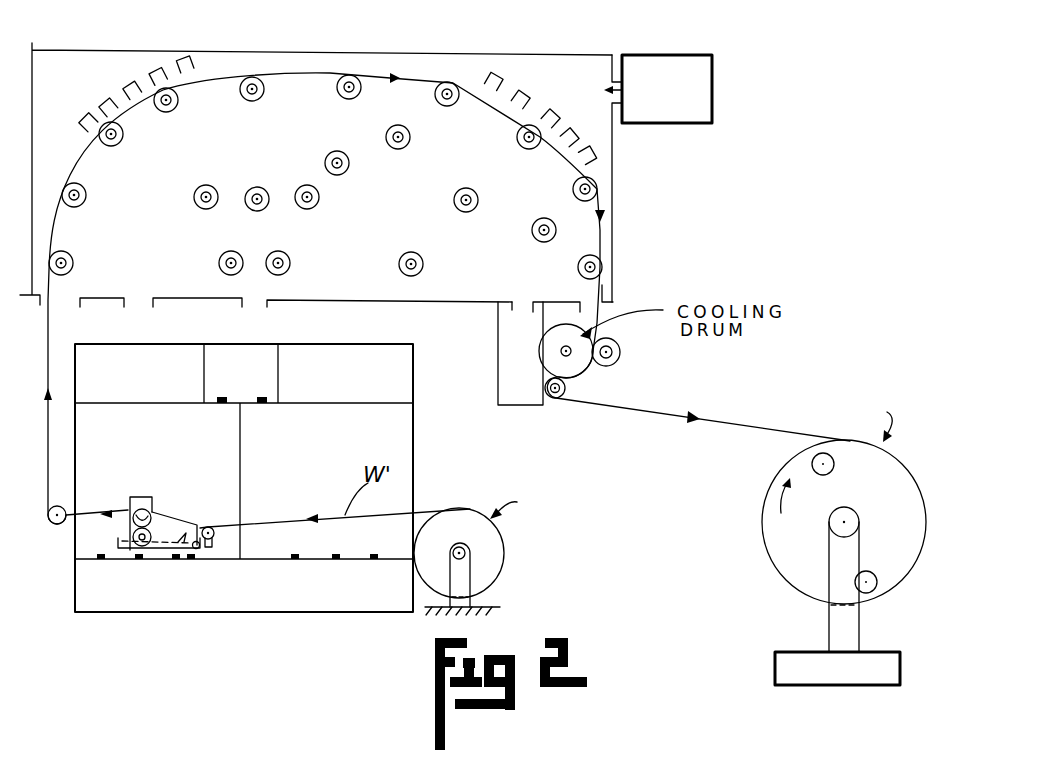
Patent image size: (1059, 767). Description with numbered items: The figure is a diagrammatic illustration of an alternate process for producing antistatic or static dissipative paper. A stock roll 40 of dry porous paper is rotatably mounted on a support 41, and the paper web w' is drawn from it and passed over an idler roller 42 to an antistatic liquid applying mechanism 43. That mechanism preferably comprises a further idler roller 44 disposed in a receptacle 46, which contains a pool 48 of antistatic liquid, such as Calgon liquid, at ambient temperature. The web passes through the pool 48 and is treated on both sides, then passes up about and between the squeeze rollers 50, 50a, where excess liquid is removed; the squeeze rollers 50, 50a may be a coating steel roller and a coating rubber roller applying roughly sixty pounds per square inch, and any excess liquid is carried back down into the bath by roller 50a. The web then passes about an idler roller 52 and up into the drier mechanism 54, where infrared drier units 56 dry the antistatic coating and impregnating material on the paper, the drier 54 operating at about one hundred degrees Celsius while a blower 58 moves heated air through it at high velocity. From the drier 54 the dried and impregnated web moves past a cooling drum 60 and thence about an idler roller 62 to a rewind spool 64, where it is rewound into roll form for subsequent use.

The stock roll 40 is at (478, 503).
The support 41 is at (473, 603).
The idler roller 42 is at (213, 535).
The antistatic liquid applying mechanism 43 is at (192, 504).
The idler roller 44 is at (207, 550).
The receptacle 46 is at (117, 540).
The pool of antistatic liquid 48 is at (172, 515).
The squeeze roller 50 is at (158, 518).
The squeeze roller 50a is at (157, 560).
The idler roller 52 is at (55, 524).
The drier mechanism 54 is at (514, 52).
The infrared drier units 56 is at (157, 58).
The blower 58 is at (662, 62).
The cooling drum 60 is at (588, 363).
The idler roller 62 is at (552, 399).
The rewind spool 64 is at (897, 457).